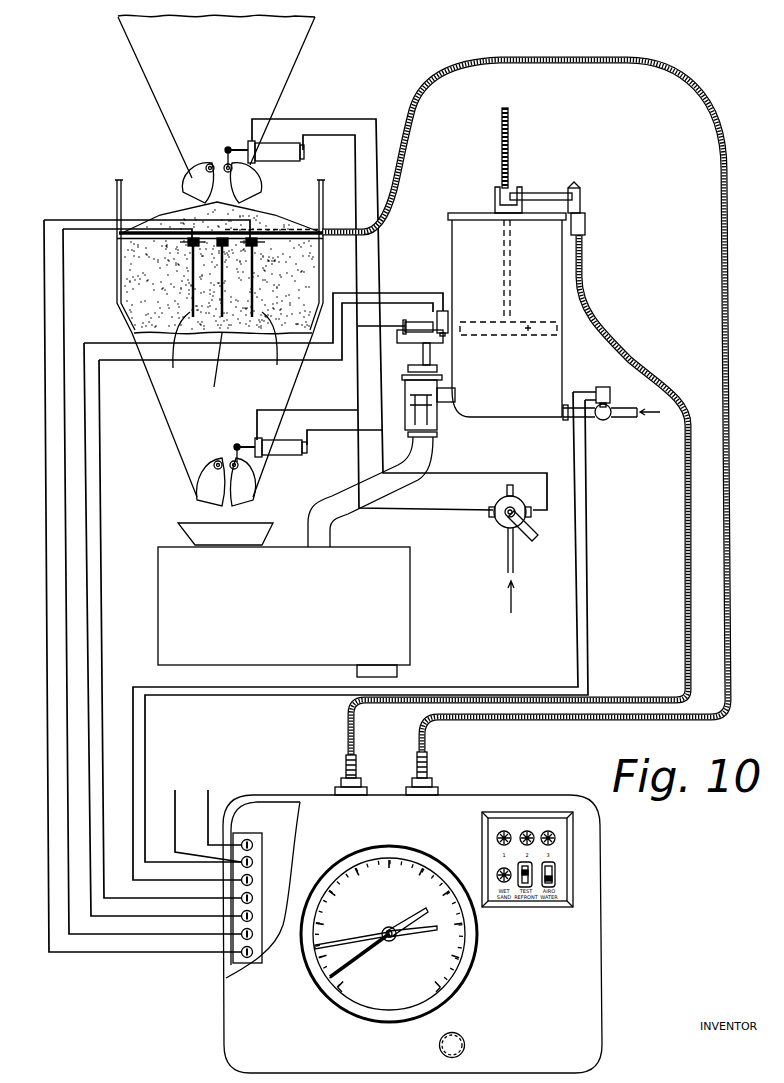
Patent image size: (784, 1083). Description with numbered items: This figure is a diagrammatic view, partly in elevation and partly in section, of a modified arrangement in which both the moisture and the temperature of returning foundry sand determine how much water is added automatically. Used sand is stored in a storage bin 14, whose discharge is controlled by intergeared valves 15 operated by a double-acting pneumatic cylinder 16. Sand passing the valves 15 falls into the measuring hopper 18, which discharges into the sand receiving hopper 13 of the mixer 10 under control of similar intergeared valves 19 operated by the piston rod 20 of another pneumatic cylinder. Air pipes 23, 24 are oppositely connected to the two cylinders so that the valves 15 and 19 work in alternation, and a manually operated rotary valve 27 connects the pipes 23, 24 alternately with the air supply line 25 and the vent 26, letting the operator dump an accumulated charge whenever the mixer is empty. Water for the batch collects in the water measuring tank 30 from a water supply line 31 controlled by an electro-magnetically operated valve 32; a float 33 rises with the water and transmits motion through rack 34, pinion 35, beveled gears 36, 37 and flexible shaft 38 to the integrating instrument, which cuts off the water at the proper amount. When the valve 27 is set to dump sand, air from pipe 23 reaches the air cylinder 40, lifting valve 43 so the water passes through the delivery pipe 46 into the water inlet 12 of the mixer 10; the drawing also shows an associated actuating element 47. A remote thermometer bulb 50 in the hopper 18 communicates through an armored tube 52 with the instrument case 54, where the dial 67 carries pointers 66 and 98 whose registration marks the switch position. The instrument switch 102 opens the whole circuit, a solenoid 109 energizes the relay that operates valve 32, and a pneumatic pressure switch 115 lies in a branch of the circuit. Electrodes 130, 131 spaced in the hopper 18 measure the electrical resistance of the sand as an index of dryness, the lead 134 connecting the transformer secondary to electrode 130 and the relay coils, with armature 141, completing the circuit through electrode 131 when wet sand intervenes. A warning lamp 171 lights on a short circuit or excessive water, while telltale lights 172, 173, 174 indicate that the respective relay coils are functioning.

The mixer 10 is at (268, 580).
The water inlet 12 is at (322, 533).
The sand receiving hopper 13 is at (195, 533).
The storage bin 14 is at (165, 98).
The valves 15 is at (195, 180).
The double-acting pneumatic cylinder 16 is at (282, 150).
The measuring hopper 18 is at (117, 296).
The valves 19 is at (210, 487).
The piston rod 20 is at (252, 440).
The pipe 23 is at (381, 247).
The pipe 24 is at (358, 279).
The air supply line 25 is at (508, 565).
The vent 26 is at (505, 490).
The rotary valve 27 is at (500, 528).
The water measuring tank 30 is at (463, 262).
The water supply line 31 is at (625, 405).
The electro-magnetically operated valve 32 is at (600, 425).
The float 33 is at (526, 344).
The rack 34 is at (502, 144).
The pinion 35 is at (498, 197).
The beveled gear 36 is at (580, 192).
The beveled gear 37 is at (585, 210).
The flexible shaft 38 is at (607, 347).
The air cylinder 40 is at (414, 353).
The valve 43 is at (438, 406).
The delivery pipe 46 is at (428, 444).
The actuating cylinder 47 is at (388, 328).
The bulb 50 is at (211, 370).
The armored tube 52 is at (672, 88).
The instrument case 54 is at (222, 1030).
The pointer 66 is at (368, 949).
The dial 67 is at (318, 973).
The pointer 98 is at (352, 940).
The instrument switch 102 is at (527, 888).
The solenoid 109 is at (548, 888).
The pneumatic pressure switch 115 is at (437, 314).
The electrode 130 is at (175, 360).
The electrode 131 is at (266, 360).
The lead 134 is at (107, 232).
The armature 141 is at (108, 220).
The warning lamp 171 is at (497, 875).
The telltale light 172 is at (497, 838).
The telltale light 173 is at (530, 830).
The telltale light 174 is at (557, 838).